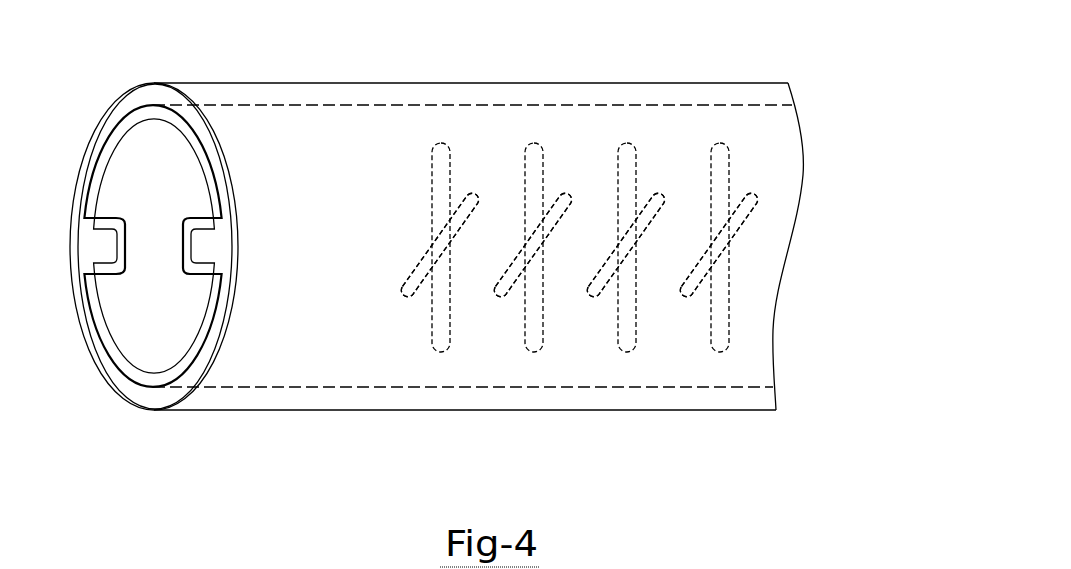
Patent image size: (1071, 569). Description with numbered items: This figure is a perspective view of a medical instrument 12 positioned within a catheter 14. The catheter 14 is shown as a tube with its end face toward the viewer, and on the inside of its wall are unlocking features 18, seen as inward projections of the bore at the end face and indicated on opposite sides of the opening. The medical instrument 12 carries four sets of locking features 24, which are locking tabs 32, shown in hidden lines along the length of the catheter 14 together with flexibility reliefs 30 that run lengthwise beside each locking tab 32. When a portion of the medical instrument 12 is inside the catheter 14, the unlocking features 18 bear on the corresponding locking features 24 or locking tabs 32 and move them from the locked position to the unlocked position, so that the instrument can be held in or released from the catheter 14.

The medical instrument 12 is at (370, 93).
The catheter 14 is at (207, 78).
The unlocking features 18 is at (204, 245).
The locking features 24 is at (689, 237).
The flexibility reliefs 30 is at (444, 352).
The locking tabs 32 is at (410, 237).